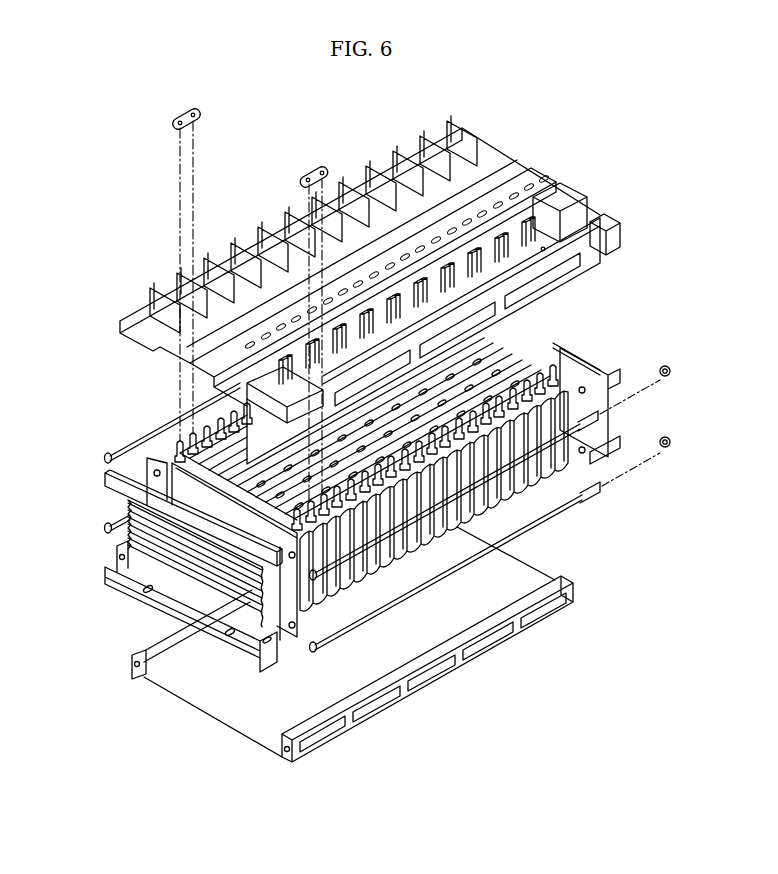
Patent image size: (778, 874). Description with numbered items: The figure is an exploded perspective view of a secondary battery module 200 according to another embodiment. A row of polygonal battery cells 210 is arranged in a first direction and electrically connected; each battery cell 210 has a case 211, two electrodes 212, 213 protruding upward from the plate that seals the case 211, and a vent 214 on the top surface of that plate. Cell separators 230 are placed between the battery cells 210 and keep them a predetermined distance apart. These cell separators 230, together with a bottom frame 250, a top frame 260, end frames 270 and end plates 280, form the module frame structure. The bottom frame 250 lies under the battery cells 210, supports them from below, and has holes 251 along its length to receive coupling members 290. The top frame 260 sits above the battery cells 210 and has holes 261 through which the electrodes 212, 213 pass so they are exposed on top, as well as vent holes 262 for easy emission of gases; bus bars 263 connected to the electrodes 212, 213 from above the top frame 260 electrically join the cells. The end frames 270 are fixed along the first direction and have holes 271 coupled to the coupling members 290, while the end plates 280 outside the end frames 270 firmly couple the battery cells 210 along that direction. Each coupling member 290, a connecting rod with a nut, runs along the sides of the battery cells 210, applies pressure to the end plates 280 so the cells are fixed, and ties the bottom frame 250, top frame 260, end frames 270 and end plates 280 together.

The secondary battery module 200 is at (91, 107).
The battery cell 210 is at (432, 396).
The case 211 is at (614, 401).
The electrode 212 is at (540, 367).
The electrode 213 is at (577, 360).
The vent 214 is at (503, 340).
The cell separator 230 is at (512, 406).
The bottom frame 250 is at (277, 761).
The hole 251 is at (288, 753).
The top frame 260 is at (250, 239).
The hole 261 is at (544, 247).
The vent hole 262 is at (460, 222).
The bus bar 263 is at (183, 112).
The end frame 270 is at (290, 636).
The hole 271 is at (265, 641).
The end plate 280 is at (124, 593).
The coupling member 290 is at (592, 503).